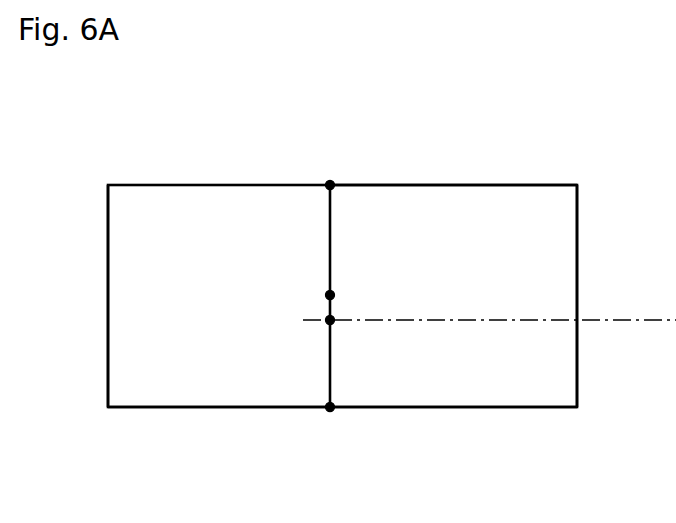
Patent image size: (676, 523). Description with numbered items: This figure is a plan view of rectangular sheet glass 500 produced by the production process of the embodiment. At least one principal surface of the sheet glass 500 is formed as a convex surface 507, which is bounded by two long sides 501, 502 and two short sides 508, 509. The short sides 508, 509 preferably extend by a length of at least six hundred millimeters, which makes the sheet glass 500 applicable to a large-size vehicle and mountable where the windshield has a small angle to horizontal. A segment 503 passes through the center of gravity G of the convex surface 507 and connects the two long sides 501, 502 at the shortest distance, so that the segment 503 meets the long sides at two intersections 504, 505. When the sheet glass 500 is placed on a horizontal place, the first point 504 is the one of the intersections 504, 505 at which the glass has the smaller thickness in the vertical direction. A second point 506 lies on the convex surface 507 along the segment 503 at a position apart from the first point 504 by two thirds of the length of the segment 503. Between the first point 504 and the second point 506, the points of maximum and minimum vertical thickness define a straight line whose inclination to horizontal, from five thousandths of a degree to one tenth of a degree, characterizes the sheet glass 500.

The sheet glass 500 is at (218, 145).
The long side 501 is at (466, 185).
The long side 502 is at (477, 407).
The segment 503 is at (330, 213).
The first point 504 is at (330, 407).
The intersection 505 is at (330, 185).
The second point 506 is at (330, 320).
The convex surface 507 is at (232, 383).
The short side 508 is at (108, 338).
The short side 509 is at (578, 232).
The center of gravity G is at (342, 290).